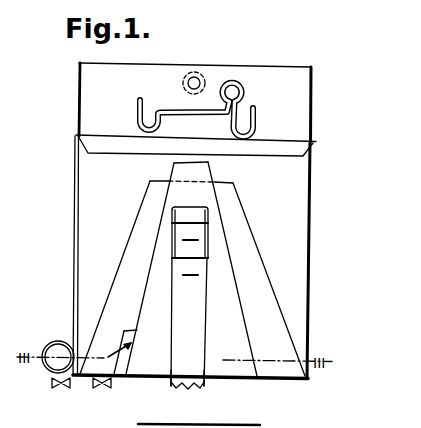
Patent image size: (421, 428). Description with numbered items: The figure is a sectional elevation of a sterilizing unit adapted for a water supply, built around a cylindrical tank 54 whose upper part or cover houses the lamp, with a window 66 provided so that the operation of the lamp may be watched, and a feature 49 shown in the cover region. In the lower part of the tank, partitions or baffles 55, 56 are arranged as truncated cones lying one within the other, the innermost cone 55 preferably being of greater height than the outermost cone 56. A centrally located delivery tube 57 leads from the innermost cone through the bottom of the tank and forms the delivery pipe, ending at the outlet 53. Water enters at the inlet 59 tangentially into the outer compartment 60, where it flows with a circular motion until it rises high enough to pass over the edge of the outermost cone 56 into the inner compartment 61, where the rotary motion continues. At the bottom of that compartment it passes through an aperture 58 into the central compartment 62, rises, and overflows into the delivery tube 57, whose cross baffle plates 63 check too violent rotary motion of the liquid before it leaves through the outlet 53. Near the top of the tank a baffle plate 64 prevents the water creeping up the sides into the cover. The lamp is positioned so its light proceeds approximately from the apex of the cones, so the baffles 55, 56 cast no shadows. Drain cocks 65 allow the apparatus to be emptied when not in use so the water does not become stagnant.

The spring wire clip 49 is at (250, 97).
The outlet 53 is at (187, 378).
The cylindrical tank 54 is at (310, 249).
The innermost cone baffle 55 is at (211, 164).
The outermost cone baffle 56 is at (262, 270).
The delivery tube 57 is at (204, 326).
The aperture 58 is at (134, 361).
The inlet 59 is at (53, 341).
The outer compartment 60 is at (192, 221).
The inner compartment 61 is at (115, 277).
The central compartment 62 is at (141, 311).
The cross baffle plates 63 is at (198, 272).
The baffle plate 64 is at (196, 157).
The drain cocks 65 is at (96, 388).
The window 66 is at (183, 87).